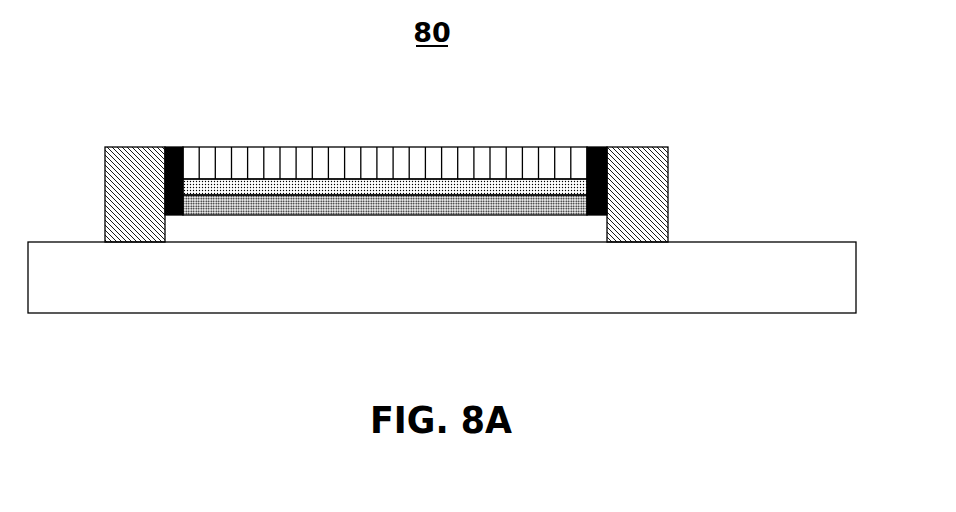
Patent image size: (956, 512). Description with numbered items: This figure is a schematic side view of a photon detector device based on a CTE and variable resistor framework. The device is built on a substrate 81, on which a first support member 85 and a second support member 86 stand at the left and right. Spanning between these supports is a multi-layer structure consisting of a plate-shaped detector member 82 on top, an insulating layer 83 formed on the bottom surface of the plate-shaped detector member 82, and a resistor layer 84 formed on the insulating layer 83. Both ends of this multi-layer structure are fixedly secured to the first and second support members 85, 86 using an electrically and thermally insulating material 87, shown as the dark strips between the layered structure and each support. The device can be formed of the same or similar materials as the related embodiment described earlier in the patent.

The substrate 81 is at (97, 313).
The plate-shaped detector member 82 is at (368, 147).
The insulating layer 83 is at (543, 187).
The resistor layer 84 is at (288, 216).
The first support member 85 is at (105, 207).
The second support member 86 is at (668, 207).
The electrically and thermally insulating material 87 is at (169, 147).